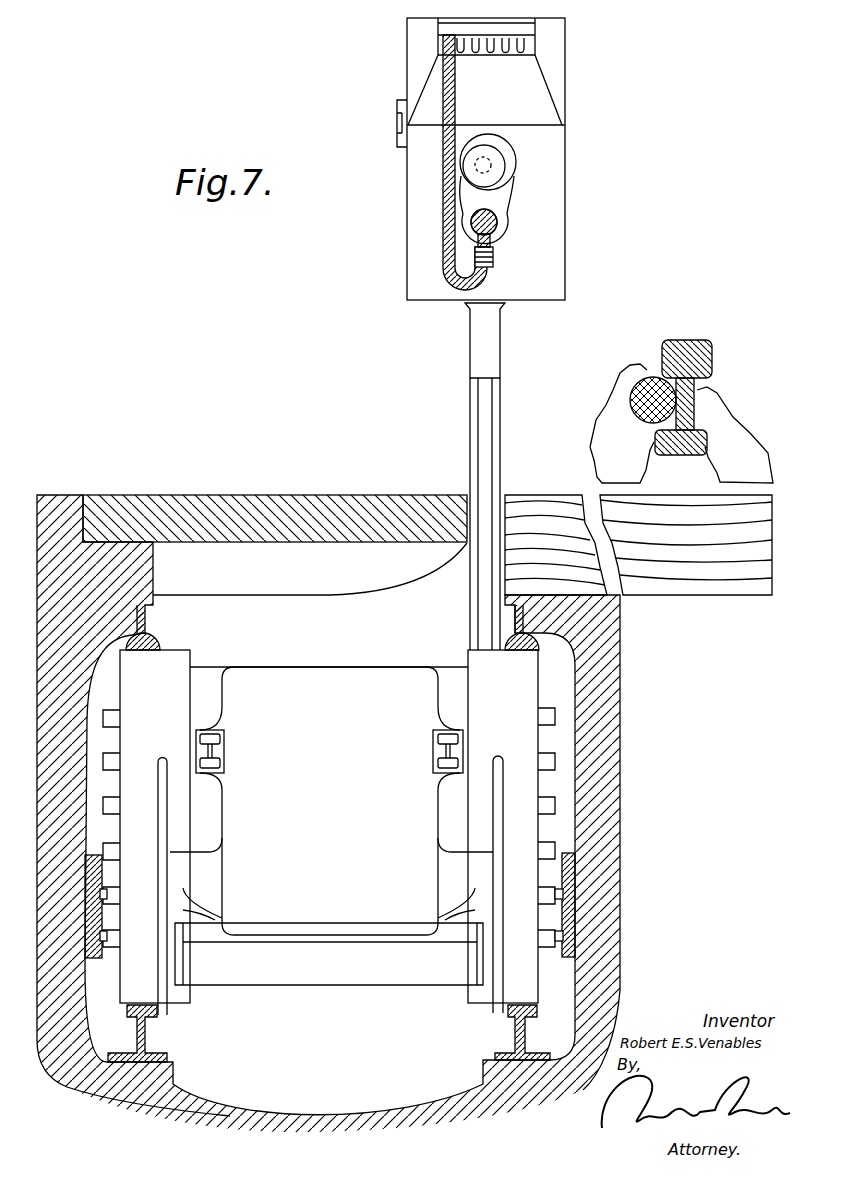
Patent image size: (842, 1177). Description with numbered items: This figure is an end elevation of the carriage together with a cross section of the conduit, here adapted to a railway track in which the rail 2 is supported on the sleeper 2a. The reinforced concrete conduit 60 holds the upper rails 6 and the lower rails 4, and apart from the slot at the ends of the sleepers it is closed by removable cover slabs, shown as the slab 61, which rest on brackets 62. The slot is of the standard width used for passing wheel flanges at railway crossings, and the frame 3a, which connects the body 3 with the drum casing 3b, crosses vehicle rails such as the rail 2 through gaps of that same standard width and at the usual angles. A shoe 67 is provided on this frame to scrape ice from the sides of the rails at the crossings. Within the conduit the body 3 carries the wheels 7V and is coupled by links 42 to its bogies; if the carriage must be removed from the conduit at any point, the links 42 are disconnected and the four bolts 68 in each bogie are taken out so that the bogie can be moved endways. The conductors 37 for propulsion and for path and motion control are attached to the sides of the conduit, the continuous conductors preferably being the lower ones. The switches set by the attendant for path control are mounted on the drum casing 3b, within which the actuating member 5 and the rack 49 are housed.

The rail 2 is at (682, 340).
The sleeper 2a is at (673, 588).
The body 3 is at (331, 826).
The frame 3a is at (470, 443).
The drum casing 3b is at (552, 235).
The lower rails 4 is at (157, 1020).
The operating rod / hook 5 is at (455, 153).
The upper rails 6 is at (160, 637).
The clamping jaw slide 7V is at (175, 665).
The conductors 37 is at (90, 895).
The links 42 is at (490, 443).
The rack / comb 49 is at (527, 50).
The reinforced concrete conduit 60 is at (604, 738).
The cover slab 61 is at (307, 480).
The brackets 62 is at (330, 590).
The shoe 67 is at (475, 332).
The bolts 68 is at (222, 766).